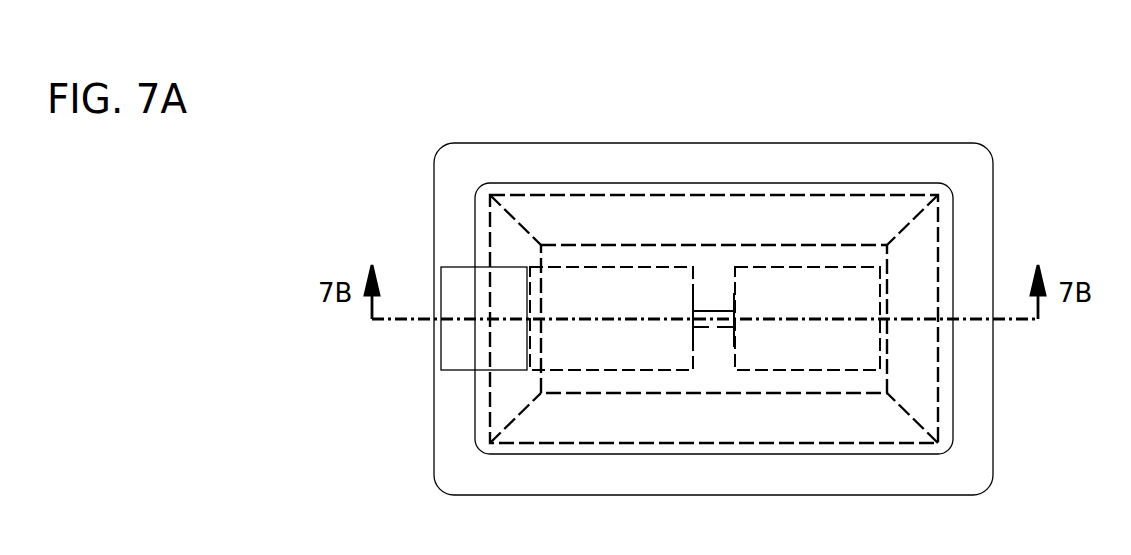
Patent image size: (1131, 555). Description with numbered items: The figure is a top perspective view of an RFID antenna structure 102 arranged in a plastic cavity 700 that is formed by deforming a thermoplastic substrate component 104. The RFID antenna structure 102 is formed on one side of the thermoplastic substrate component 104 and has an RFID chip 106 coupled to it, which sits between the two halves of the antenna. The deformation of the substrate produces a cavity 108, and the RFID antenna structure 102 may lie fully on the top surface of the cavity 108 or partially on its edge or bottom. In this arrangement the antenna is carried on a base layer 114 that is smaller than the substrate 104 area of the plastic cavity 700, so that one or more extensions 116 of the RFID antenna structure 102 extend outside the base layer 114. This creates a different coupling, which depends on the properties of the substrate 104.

The plastic cavity 700 is at (944, 102).
The thermoplastic substrate component 104 is at (823, 163).
The base layer 114 is at (945, 402).
The RFID antenna structure 102 is at (588, 296).
The cavity 108 is at (827, 258).
The RFID chip 106 is at (720, 303).
The extension 116 is at (455, 338).